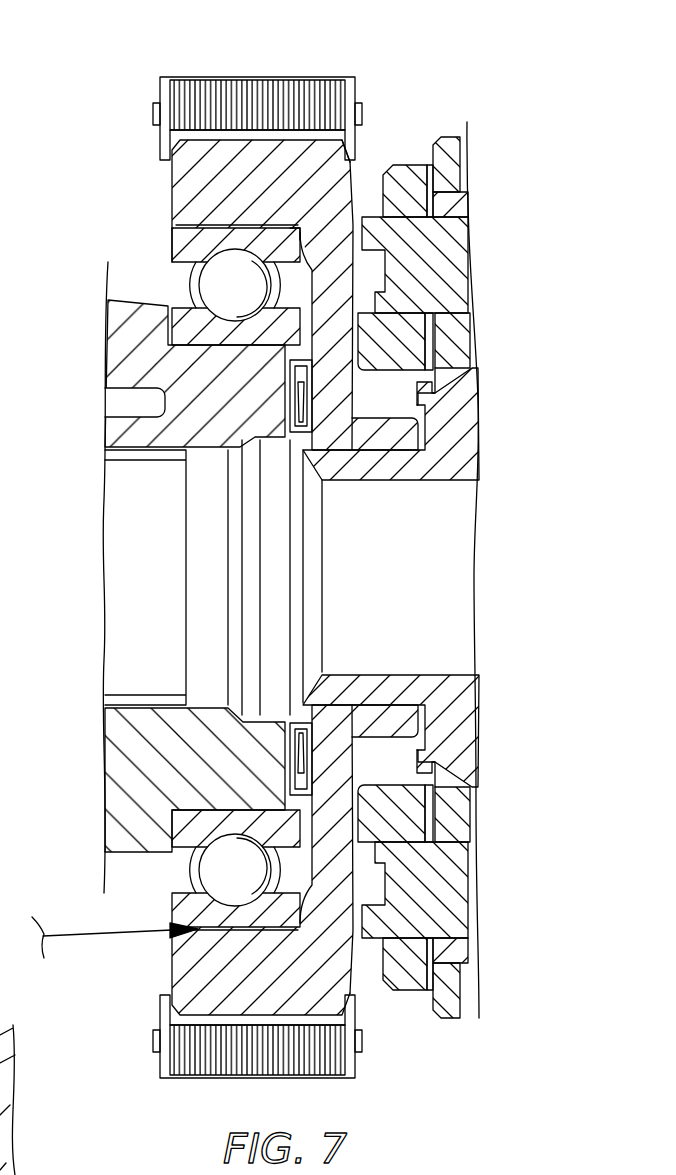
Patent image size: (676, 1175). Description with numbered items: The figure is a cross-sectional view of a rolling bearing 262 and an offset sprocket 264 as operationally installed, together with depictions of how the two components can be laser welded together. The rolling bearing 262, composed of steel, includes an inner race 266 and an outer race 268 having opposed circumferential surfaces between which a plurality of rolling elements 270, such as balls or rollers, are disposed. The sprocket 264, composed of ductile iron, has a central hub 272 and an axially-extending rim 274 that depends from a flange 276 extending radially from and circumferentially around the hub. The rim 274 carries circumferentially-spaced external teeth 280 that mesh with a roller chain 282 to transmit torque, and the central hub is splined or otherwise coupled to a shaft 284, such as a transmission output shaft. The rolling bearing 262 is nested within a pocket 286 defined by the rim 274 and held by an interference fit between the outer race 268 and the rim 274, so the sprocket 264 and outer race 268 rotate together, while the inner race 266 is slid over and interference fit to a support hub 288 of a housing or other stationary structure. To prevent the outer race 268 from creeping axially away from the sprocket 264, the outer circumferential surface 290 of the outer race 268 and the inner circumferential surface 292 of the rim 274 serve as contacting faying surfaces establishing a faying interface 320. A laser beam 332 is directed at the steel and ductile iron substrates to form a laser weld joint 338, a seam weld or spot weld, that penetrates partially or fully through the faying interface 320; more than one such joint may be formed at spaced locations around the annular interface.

The rolling bearing 262 is at (164, 329).
The sprocket 264 is at (363, 131).
The inner race 266 is at (182, 342).
The outer race 268 is at (182, 238).
The rolling elements 270 is at (247, 310).
The central hub 272 is at (349, 434).
The axially-extending rim 274 is at (183, 180).
The flange 276 is at (333, 288).
The external teeth 280 is at (199, 143).
The roller chain 282 is at (233, 1070).
The shaft 284 is at (458, 428).
The pocket 286 is at (166, 231).
The support hub 288 is at (200, 745).
The outer circumferential surface 290 is at (257, 230).
The inner circumferential surface 292 is at (333, 217).
The faying interface 320 is at (238, 218).
The laser beam 332 is at (72, 923).
The laser weld joint 338 is at (187, 937).